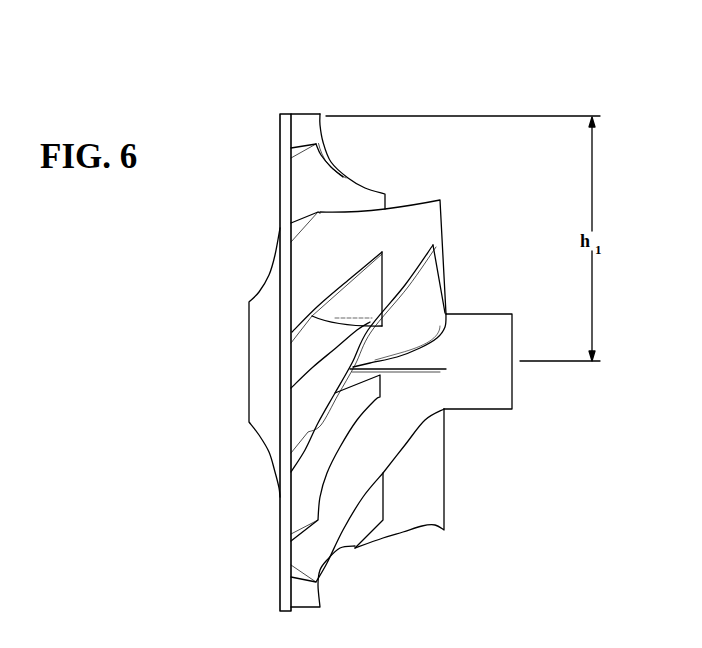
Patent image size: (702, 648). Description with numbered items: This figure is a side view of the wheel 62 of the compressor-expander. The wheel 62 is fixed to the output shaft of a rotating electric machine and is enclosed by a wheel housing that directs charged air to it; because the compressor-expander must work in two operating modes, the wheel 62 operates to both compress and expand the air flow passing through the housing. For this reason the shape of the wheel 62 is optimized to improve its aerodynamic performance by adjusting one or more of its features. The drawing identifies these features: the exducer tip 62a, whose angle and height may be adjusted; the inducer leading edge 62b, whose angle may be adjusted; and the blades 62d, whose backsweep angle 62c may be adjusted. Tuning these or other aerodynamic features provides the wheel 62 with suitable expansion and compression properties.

The wheel 62 is at (241, 138).
The exducer tip 62a is at (320, 114).
The inducer leading edge 62b is at (447, 225).
The backsweep angle 62c is at (295, 230).
The blades 62d is at (313, 257).